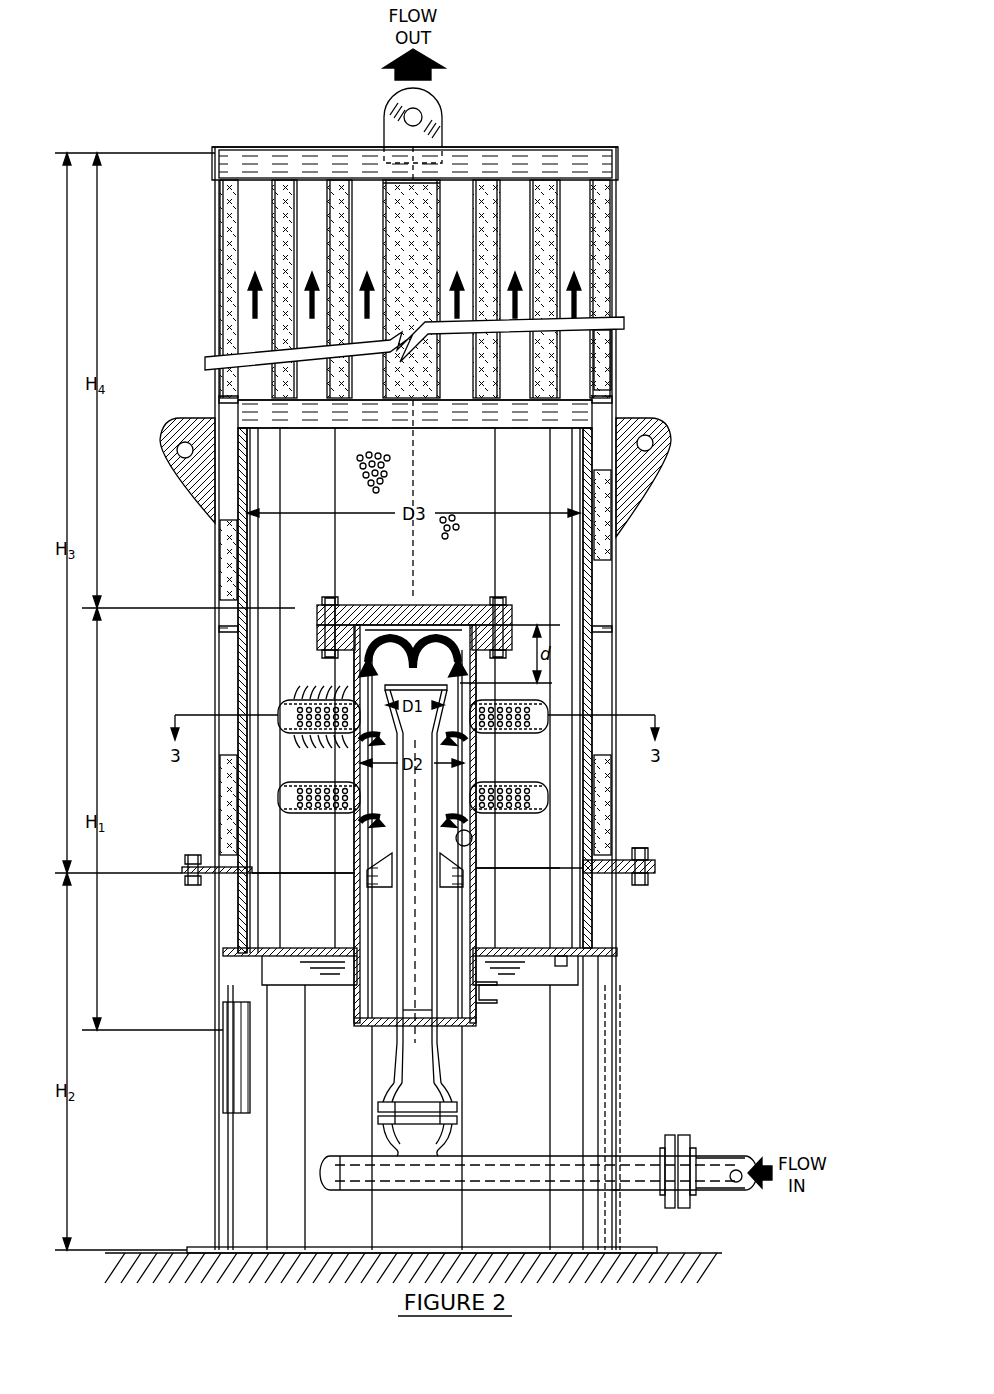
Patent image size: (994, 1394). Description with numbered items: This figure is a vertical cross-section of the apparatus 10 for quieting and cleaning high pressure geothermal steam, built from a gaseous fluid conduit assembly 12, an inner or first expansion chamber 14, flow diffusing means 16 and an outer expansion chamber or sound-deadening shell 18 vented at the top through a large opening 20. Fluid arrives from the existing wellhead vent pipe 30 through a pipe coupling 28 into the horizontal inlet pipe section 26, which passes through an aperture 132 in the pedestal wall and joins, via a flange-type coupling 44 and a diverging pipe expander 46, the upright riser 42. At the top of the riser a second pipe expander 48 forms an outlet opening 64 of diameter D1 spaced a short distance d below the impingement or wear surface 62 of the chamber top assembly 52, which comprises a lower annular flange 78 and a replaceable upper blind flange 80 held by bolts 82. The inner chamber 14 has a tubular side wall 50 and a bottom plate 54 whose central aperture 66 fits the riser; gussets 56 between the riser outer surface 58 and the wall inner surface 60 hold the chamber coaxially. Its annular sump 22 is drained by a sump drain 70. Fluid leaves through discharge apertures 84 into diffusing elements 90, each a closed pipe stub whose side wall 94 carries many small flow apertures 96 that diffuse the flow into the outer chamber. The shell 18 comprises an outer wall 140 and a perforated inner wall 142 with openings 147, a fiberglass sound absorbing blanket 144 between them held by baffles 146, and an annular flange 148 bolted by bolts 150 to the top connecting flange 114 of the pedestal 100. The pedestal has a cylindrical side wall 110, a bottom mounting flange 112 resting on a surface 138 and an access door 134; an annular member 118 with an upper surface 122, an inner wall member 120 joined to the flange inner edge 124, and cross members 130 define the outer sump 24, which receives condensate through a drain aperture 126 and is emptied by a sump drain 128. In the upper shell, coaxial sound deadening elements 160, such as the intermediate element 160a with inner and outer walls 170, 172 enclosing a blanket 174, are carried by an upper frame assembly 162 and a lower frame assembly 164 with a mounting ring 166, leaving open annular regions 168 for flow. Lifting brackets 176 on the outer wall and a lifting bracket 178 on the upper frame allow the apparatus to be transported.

The apparatus 10 is at (648, 660).
The gaseous fluid conduit assembly 12 is at (446, 1194).
The inner or first fluid expansion chamber 14 is at (357, 829).
The flow diffusing means 16 is at (302, 814).
The outer or second expansion chamber 18 is at (618, 567).
The vent or opening 20 is at (578, 150).
The sump region of first chamber 22 is at (440, 962).
The sump region of second chamber 24 is at (518, 890).
The fluid inlet pipe section 26 is at (510, 1156).
The pipe coupling 28 is at (676, 1134).
The wellhead vent pipe 30 is at (702, 1155).
The discharge section or riser 42 is at (396, 1044).
The flange-type coupling 44 is at (458, 1108).
The diverging pipe expander 46 is at (442, 1066).
The diverging pipe expander 48 is at (450, 690).
The tubular side wall 50 is at (362, 940).
The top assembly 52 is at (320, 614).
The bottom plate 54 is at (472, 1028).
The gussets 56 is at (390, 855).
The outer surface of riser 58 is at (432, 930).
The inner surface of chamber wall 60 is at (472, 840).
The flow impingement or wear surface 62 is at (396, 624).
The outlet opening 64 is at (420, 686).
The central aperture 66 is at (435, 1020).
The sump drain 70 is at (497, 998).
The lower annular flange 78 is at (318, 648).
The upper blind flange or wear member 80 is at (513, 610).
The bolts 82 is at (330, 597).
The discharge apertures 84 is at (360, 740).
The flow diffusing elements 90 is at (522, 768).
The side wall of diffusing element 94 is at (520, 734).
The flow apertures 96 is at (518, 812).
The base or pedestal 100 is at (216, 1148).
The cylindrical side wall of pedestal 110 is at (618, 1062).
The bottom support or mounting flange 112 is at (202, 1246).
The top connecting flange 114 is at (655, 870).
The annular member 118 is at (598, 952).
The cylindrical inner wall member 120 is at (240, 900).
The upper surface of annular member 122 is at (282, 948).
The inner edge of top flange 124 is at (252, 876).
The drain aperture 126 is at (478, 946).
The sump drain 128 is at (561, 966).
The cross members 130 is at (347, 988).
The aperture 132 is at (610, 1198).
The access door 134 is at (236, 1068).
The surface 138 is at (680, 1252).
The outer wall 140 is at (216, 565).
The inner wall 142 is at (248, 562).
The sound absorbing blanket 144 is at (228, 604).
The baffles 146 is at (604, 398).
The inner wall openings 147 is at (385, 488).
The annular flange 148 is at (650, 860).
The bolts 150 is at (640, 848).
The sound absorbing or deadening elements 160 is at (388, 182).
The intermediate element 160a is at (343, 404).
The upper frame assembly 162 is at (490, 148).
The lower frame assembly 164 is at (396, 426).
The mounting ring 166 is at (490, 420).
The open annular regions 168 is at (574, 188).
The inner wall of intermediate element 170 is at (352, 285).
The outer wall of intermediate element 172 is at (330, 322).
The sound deadening blanket 174 is at (342, 196).
The lifting brackets 176 is at (176, 420).
The lifting bracket 178 is at (392, 100).